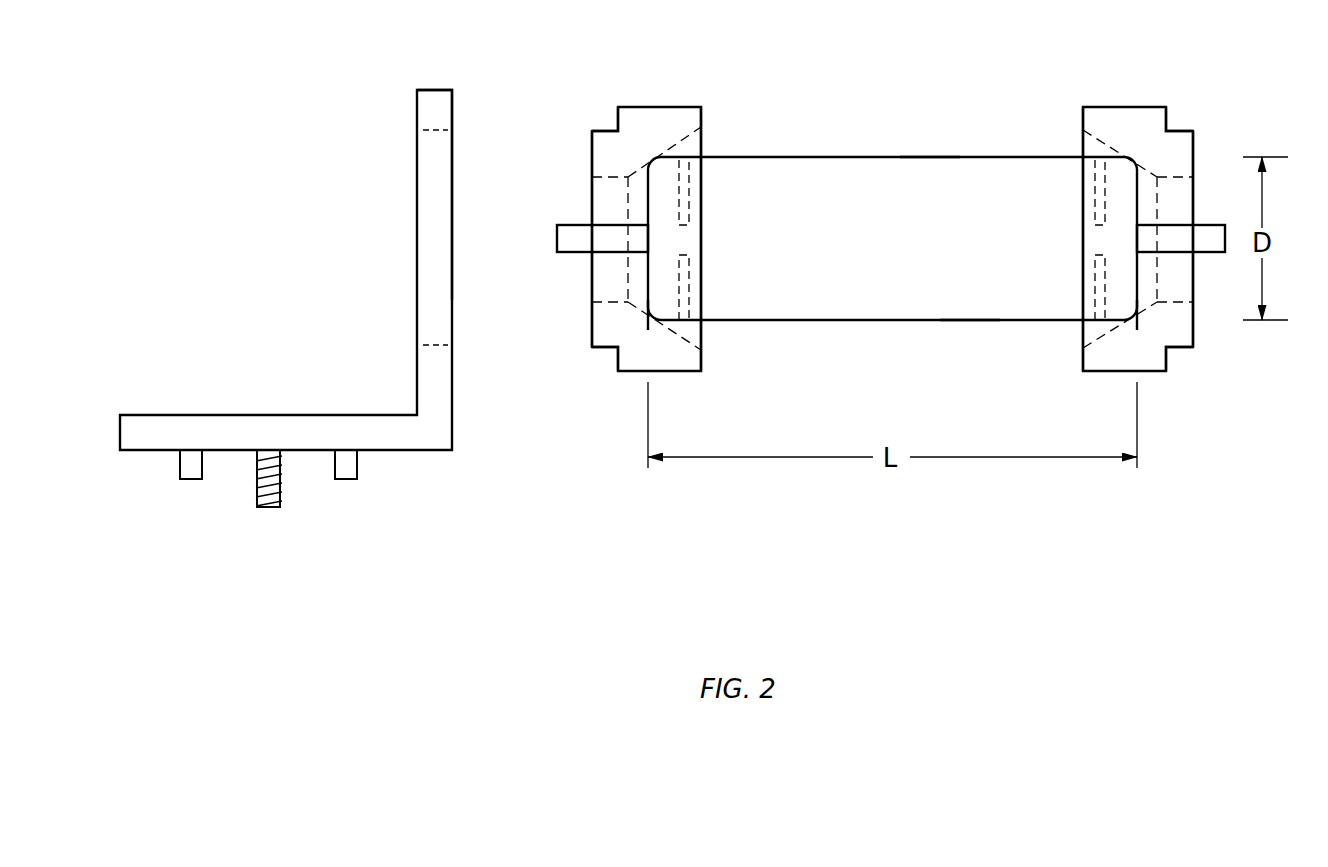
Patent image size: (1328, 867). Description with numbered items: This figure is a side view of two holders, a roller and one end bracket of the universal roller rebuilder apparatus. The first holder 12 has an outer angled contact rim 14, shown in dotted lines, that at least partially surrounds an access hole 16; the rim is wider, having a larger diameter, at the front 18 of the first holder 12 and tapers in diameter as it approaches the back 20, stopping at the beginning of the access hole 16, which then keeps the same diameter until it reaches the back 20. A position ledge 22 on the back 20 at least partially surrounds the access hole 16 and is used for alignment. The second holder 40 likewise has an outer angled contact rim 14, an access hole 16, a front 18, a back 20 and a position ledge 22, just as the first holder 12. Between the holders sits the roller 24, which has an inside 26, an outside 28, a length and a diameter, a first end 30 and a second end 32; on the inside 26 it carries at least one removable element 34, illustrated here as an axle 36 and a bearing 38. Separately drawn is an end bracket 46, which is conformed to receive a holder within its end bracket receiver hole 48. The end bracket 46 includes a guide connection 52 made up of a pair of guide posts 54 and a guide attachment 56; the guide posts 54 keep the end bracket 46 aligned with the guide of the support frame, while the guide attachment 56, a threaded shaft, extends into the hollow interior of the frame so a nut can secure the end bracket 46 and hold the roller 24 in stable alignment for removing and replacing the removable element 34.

The first holder 12 is at (663, 107).
The outer angled contact rim 14 is at (690, 145).
The access hole 16 is at (612, 200).
The front 18 is at (702, 362).
The back 20 is at (592, 335).
The position ledge 22 is at (607, 130).
The roller 24 is at (828, 155).
The inside 26 is at (967, 187).
The outside 28 is at (927, 155).
The first end 30 is at (686, 340).
The second end 32 is at (1090, 343).
The removable element 34 is at (715, 230).
The axle 36 is at (563, 253).
The bearing 38 is at (690, 187).
The second holder 40 is at (1127, 107).
The end bracket 46 is at (417, 115).
The end bracket receiver hole 48 is at (437, 203).
The guide connection 52 is at (290, 590).
The guide post 54 is at (188, 488).
The guide attachment 56 is at (267, 507).